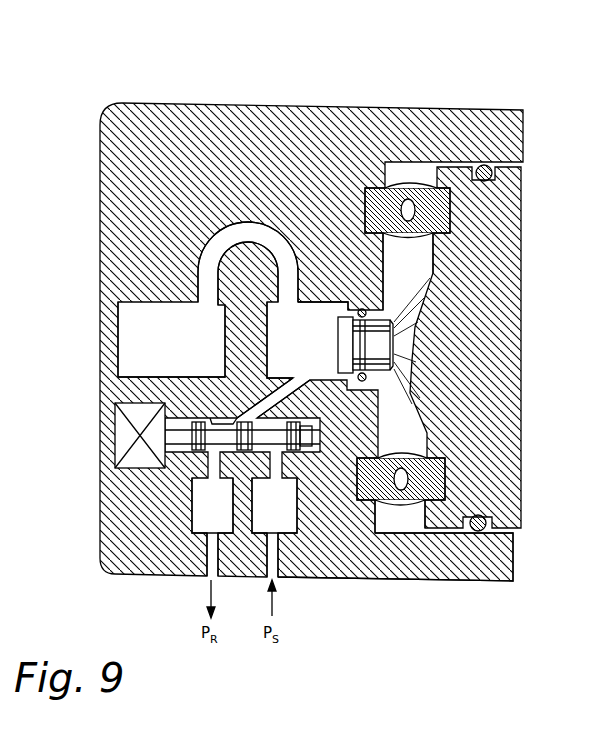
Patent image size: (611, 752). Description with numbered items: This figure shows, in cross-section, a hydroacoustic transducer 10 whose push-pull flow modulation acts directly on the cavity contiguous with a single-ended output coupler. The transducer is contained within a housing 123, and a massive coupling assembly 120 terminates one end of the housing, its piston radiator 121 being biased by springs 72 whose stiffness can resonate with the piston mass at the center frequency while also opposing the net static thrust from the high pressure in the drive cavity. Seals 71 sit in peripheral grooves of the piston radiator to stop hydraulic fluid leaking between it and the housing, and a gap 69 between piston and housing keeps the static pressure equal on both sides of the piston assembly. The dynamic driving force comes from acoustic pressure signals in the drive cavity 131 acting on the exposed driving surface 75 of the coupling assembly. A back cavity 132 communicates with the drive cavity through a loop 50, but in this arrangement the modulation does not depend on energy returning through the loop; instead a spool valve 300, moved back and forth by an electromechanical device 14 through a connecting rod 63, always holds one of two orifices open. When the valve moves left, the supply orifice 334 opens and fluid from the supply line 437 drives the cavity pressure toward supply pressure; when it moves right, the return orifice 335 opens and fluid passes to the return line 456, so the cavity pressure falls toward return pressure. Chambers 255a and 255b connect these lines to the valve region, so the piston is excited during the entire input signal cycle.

The transducer 10 is at (340, 309).
The housing 123 is at (285, 114).
The piston radiator 121 is at (523, 212).
The loop 50 is at (262, 228).
The back cavity 132 is at (186, 327).
The drive cavity 131 is at (315, 329).
The coupling assembly 120 is at (388, 308).
The springs 72 is at (406, 196).
The driving surface 75 is at (338, 359).
The supply orifice 334 is at (293, 405).
The return orifice 335 is at (218, 417).
The electromechanical device 14 is at (152, 445).
The connecting rod 63 is at (183, 442).
The valve 300 is at (318, 440).
The return chamber 255b is at (231, 514).
The supply chamber 255a is at (291, 514).
The return line 456 is at (208, 553).
The supply line 437 is at (279, 553).
The gap 69 is at (422, 528).
The seals 71 is at (478, 532).